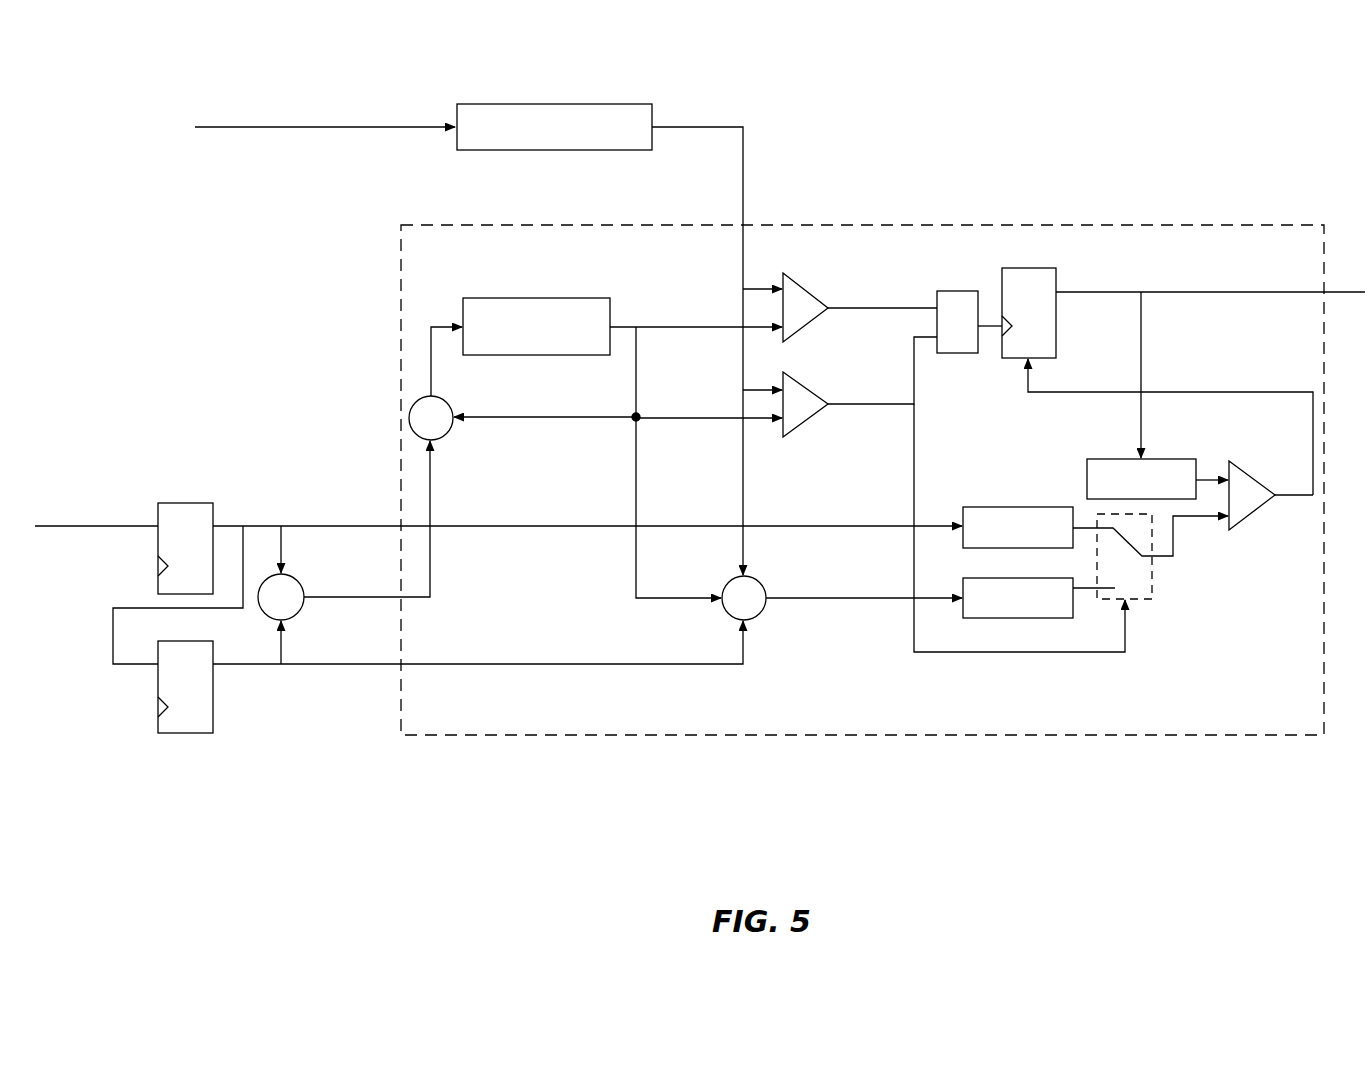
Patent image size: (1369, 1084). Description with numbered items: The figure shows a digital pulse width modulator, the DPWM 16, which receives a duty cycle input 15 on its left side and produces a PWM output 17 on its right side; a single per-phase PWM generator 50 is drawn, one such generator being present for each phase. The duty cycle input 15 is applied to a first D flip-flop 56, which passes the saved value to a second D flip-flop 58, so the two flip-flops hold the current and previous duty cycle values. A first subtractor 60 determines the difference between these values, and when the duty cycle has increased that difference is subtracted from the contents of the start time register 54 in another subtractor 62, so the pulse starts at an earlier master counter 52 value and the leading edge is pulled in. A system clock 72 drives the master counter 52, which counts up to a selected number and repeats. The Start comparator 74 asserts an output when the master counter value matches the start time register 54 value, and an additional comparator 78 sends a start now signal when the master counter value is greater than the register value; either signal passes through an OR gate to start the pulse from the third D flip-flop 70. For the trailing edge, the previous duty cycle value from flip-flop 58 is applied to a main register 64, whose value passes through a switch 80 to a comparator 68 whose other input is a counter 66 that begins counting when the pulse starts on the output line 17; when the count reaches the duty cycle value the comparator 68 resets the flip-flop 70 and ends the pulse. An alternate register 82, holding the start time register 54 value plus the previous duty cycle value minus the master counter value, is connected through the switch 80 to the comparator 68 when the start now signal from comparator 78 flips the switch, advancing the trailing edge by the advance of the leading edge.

The duty cycle input 15 is at (94, 530).
The DPWM 16 is at (485, 850).
The PWM output 17 is at (1351, 292).
The PWM generator 50 is at (400, 302).
The master counter 52 is at (627, 104).
The start time register 54 is at (588, 298).
The D flip-flop 56 is at (205, 503).
The second D flip-flop 58 is at (213, 712).
The subtractor 60 is at (298, 574).
The subtractor 62 is at (450, 432).
The main register 64 is at (1026, 507).
The counter 66 is at (1186, 459).
The comparator 68 is at (1256, 479).
The third D flip-flop 70 is at (1051, 268).
The system clock 72 is at (388, 127).
The comparator 74 is at (800, 288).
The comparator 78 is at (812, 420).
The switch 80 is at (1152, 576).
The alternate register 82 is at (1078, 618).